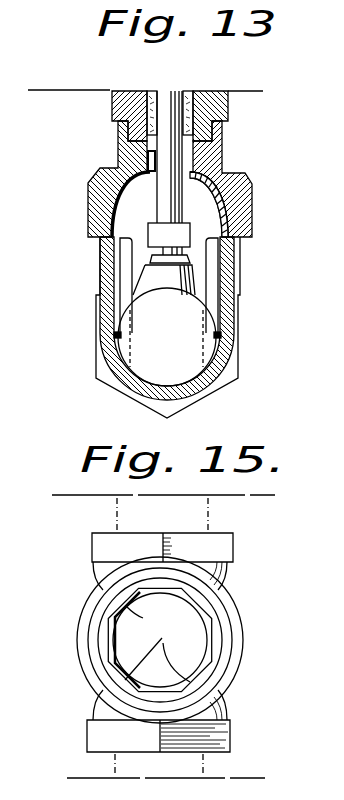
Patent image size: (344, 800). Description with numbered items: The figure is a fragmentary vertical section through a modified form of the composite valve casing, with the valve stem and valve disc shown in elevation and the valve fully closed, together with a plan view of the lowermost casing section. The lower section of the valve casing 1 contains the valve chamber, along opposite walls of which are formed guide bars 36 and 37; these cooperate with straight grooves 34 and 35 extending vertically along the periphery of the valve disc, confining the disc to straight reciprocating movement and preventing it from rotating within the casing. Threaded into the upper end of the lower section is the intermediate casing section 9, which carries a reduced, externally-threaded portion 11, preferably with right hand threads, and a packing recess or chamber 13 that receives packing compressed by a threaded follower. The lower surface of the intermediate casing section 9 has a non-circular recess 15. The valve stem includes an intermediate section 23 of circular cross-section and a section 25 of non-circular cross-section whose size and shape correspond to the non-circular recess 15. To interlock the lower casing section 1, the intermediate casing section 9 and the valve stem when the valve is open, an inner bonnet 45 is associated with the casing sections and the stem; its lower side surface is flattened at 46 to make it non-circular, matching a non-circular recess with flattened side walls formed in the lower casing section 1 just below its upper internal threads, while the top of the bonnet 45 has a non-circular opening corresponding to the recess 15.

In FIG. 13, the lower section of the valve casing 1 is at (238, 276).
In FIG. 13, the intermediate casing section 9 is at (159, 179).
In FIG. 13, the reduced, externally-threaded portion 11 is at (160, 176).
In FIG. 13, the packing recess or chamber 13 is at (228, 101).
In FIG. 13, the non-circular recess 15 is at (213, 150).
In FIG. 13, the intermediate section of the valve stem 23 is at (180, 197).
In FIG. 13, the section of non-circular cross-section 25 is at (190, 233).
In FIG. 13, the straight groove 34 is at (202, 345).
In FIG. 13, the straight groove 35 is at (125, 342).
In FIG. 13, the guide bar 36 is at (212, 298).
In FIG. 13, the guide bar 37 is at (120, 277).
In FIG. 13, the inner bonnet 45 is at (97, 180).
In FIG. 13, the flattened lower side surface 46 is at (148, 160).
In FIG. 15, the flattened lower side surface 46 is at (198, 602).